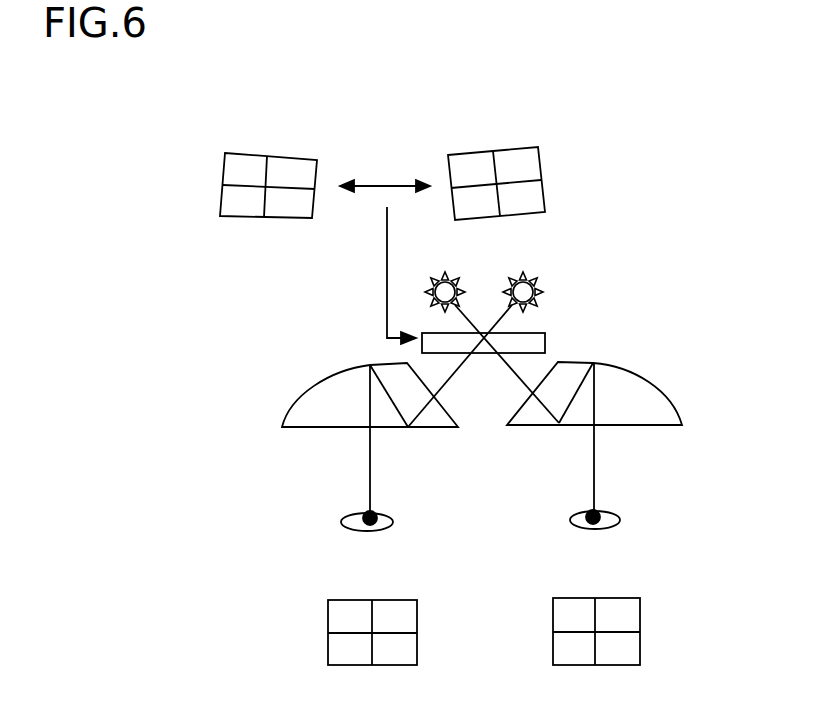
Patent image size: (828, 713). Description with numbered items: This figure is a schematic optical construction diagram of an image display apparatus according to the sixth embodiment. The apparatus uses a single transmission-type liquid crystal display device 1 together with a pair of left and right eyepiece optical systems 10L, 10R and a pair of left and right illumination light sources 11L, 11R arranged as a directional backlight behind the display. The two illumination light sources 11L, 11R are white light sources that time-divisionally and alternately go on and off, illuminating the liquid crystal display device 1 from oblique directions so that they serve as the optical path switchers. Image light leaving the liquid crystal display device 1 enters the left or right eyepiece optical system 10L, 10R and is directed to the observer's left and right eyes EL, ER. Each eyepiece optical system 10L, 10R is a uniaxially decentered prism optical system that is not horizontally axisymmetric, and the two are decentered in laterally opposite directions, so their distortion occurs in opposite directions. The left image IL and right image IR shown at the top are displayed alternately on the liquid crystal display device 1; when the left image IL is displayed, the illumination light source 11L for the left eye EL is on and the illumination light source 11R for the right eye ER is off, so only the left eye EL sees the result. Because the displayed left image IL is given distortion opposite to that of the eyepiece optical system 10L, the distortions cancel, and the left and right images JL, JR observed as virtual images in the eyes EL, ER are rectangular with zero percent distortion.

The left image IL is at (225, 170).
The right image IR is at (540, 197).
The illumination light source 11R is at (442, 282).
The illumination light source 11L is at (537, 282).
The liquid crystal display device 1 is at (545, 342).
The eyepiece optical system 10L is at (325, 380).
The eyepiece optical system 10R is at (653, 383).
The left eye EL is at (353, 532).
The right eye ER is at (608, 528).
The left image JL is at (328, 647).
The right image JR is at (640, 640).